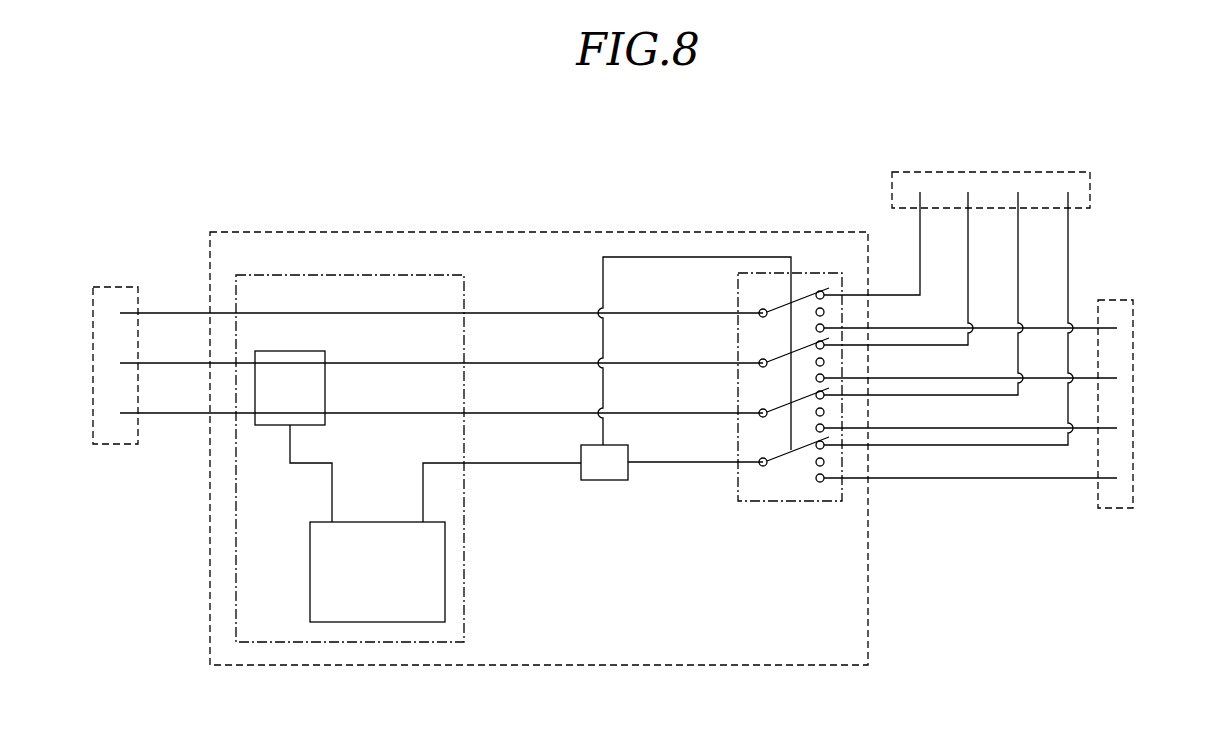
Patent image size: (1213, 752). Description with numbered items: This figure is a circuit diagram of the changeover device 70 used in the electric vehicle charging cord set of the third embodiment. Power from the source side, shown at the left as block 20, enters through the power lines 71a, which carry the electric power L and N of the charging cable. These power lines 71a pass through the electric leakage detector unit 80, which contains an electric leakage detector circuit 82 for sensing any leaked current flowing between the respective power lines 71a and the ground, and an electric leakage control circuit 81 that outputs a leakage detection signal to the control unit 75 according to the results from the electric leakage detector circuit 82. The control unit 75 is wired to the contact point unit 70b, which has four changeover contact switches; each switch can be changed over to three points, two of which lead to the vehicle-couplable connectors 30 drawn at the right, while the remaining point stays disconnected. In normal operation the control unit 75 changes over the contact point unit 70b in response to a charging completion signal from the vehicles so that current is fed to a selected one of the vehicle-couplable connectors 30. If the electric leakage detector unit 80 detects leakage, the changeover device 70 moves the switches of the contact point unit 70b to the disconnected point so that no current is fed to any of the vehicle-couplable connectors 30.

The power source 20 is at (117, 285).
The vehicle-couplable connector 30 is at (1092, 190).
The changeover device 70 is at (720, 666).
The contact point unit 70b is at (737, 297).
The power line 71a is at (187, 363).
The control unit 75 is at (605, 481).
The electric leakage detector unit 80 is at (466, 294).
The electric leakage control circuit 81 is at (310, 549).
The electric leakage detector circuit 82 is at (268, 427).